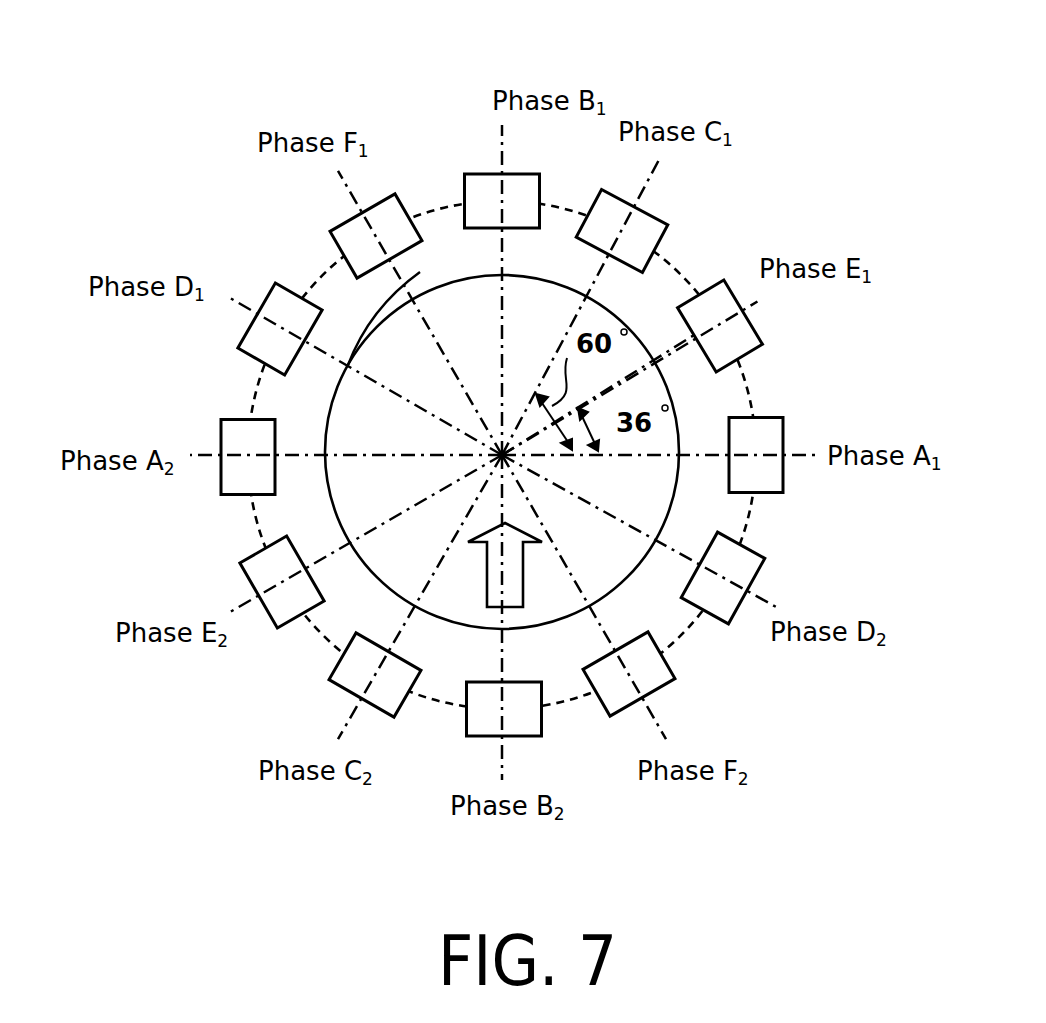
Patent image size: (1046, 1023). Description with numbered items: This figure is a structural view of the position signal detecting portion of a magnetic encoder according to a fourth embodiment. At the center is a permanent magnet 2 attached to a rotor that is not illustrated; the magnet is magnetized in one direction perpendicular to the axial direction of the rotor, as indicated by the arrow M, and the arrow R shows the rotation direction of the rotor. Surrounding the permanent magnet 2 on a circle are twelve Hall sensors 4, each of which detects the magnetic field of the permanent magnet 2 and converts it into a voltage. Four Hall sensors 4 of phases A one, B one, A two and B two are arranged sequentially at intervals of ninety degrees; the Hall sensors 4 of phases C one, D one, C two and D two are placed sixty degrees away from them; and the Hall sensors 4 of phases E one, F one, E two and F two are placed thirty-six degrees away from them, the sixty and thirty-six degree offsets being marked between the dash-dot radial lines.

The Hall sensor 4 is at (476, 160).
The permanent magnet 2 is at (612, 312).
The rotation direction R is at (346, 342).
The magnetization direction M is at (517, 595).